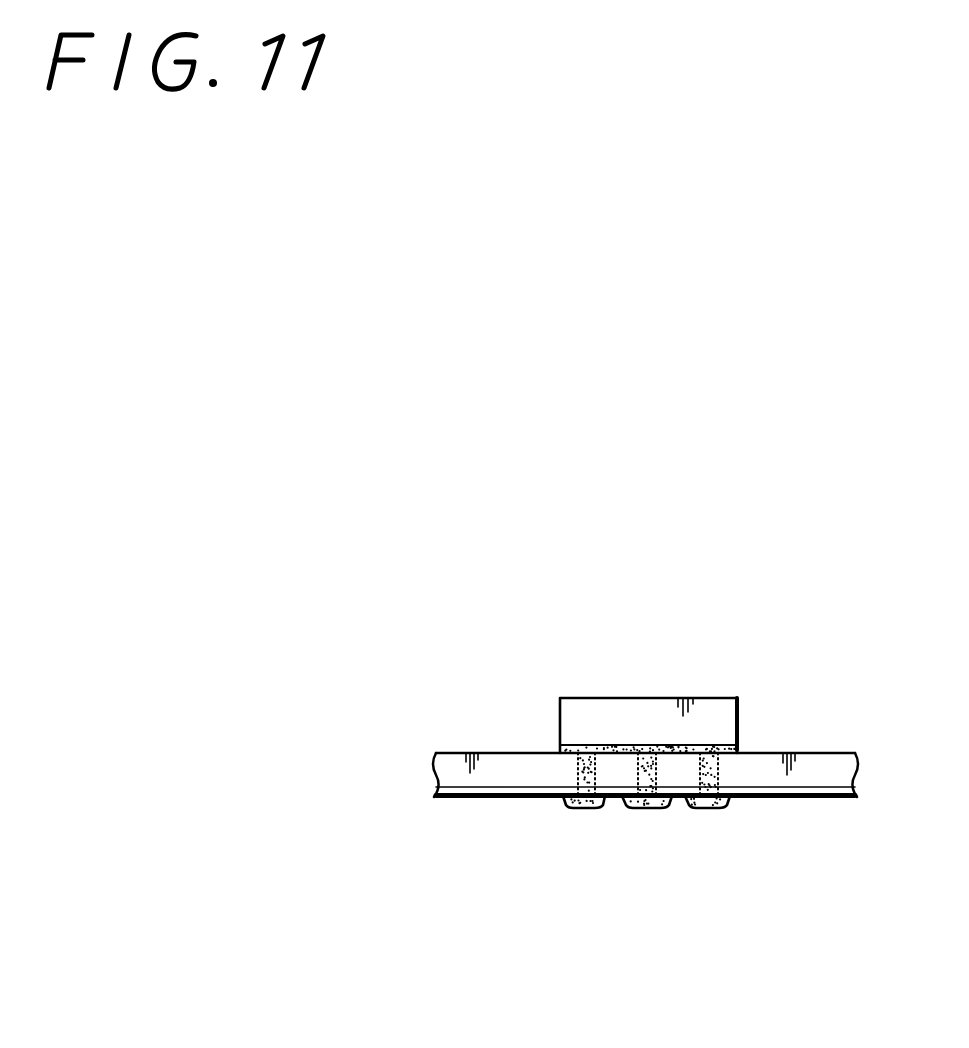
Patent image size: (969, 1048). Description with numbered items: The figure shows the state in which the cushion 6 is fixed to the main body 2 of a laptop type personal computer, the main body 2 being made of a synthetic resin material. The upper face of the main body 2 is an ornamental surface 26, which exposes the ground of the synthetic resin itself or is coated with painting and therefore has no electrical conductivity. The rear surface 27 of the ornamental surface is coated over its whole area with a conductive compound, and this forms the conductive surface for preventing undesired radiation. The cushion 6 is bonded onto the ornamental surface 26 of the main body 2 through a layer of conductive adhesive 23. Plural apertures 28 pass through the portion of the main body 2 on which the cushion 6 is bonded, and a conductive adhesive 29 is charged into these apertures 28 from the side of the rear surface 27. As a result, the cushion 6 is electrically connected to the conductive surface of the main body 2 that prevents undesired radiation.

The main body 2 is at (813, 763).
The cushion 6 is at (656, 716).
The conductive adhesive 23 is at (593, 745).
The ornamental surface 26 is at (768, 753).
The rear surface 27 is at (802, 797).
The apertures 28 is at (577, 768).
The conductive adhesive 29 is at (573, 808).